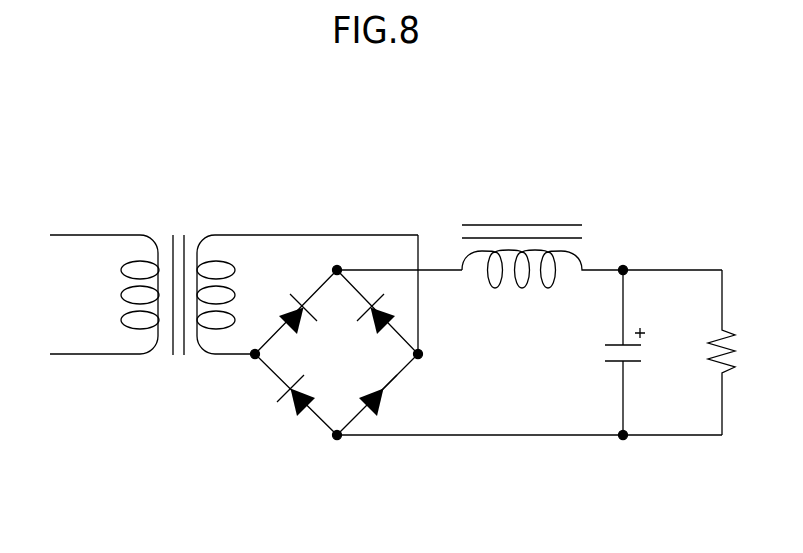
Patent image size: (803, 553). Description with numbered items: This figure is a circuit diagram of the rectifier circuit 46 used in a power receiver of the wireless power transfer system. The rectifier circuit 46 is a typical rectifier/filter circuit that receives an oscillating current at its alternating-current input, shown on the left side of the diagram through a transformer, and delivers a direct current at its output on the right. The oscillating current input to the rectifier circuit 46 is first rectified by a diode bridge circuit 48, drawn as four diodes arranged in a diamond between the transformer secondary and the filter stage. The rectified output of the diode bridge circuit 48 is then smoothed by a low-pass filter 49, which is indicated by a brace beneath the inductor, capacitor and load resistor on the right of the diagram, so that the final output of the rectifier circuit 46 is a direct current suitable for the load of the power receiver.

The rectifier circuit 46 is at (452, 144).
The diode bridge circuit 48 is at (290, 450).
The low-pass filter 49 is at (722, 457).